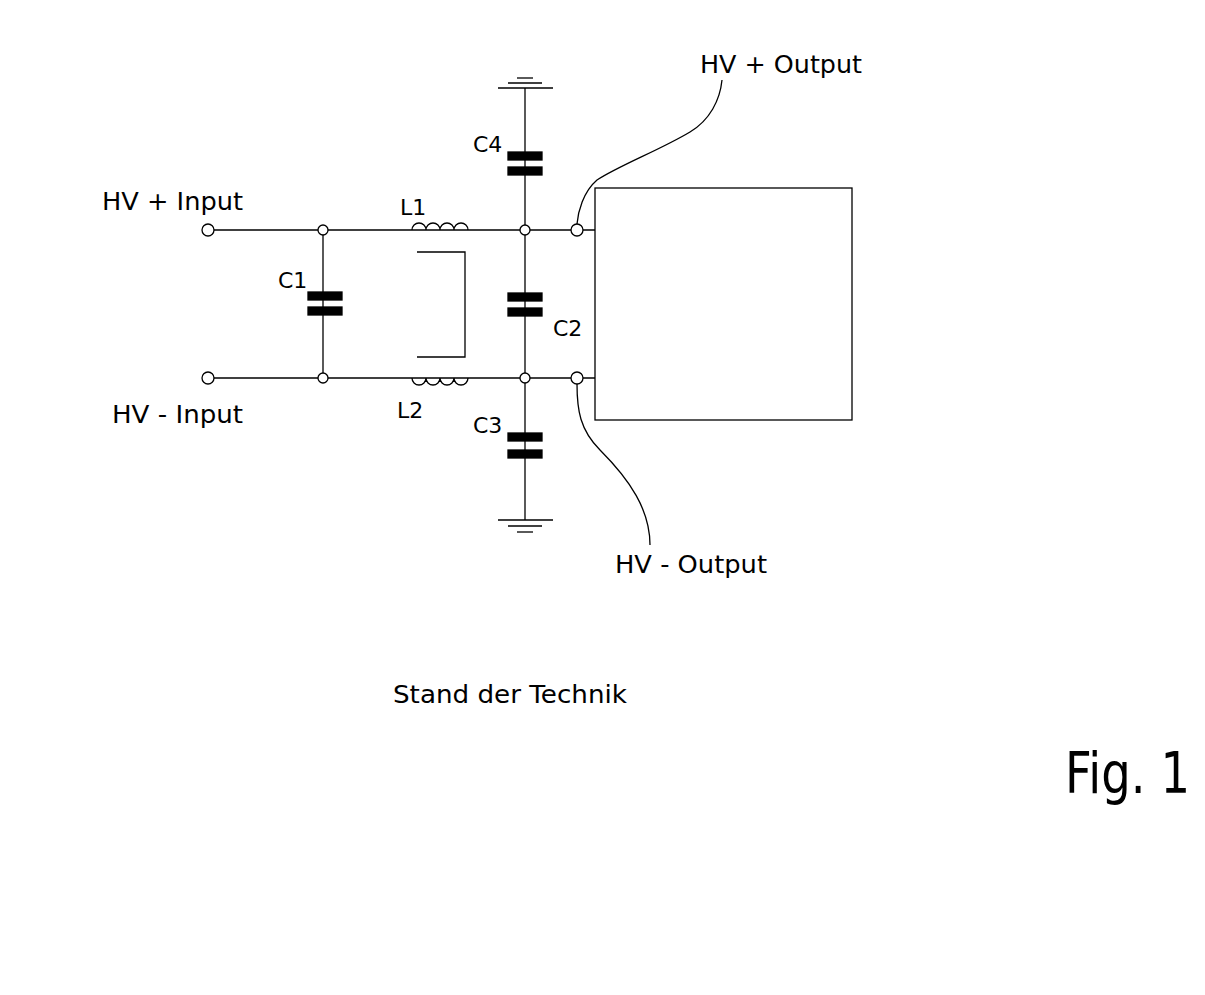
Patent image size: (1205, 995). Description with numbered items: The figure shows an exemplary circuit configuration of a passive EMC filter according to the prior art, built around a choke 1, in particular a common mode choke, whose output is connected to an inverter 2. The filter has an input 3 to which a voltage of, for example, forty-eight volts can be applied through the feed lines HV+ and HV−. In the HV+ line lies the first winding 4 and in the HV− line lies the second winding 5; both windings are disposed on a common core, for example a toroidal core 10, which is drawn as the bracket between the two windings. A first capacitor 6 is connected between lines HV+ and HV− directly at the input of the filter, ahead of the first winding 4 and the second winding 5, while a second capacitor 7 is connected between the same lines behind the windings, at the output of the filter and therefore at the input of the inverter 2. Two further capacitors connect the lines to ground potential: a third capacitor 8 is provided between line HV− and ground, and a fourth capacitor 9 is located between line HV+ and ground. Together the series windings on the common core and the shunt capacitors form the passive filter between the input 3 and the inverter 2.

The choke 1 is at (360, 162).
The inverter 2 is at (810, 420).
The input 3 is at (202, 232).
The first winding L1 4 is at (448, 228).
The second winding L2 5 is at (458, 386).
The first capacitor C1 6 is at (308, 314).
The second capacitor C2 7 is at (533, 290).
The third capacitor C3 8 is at (508, 453).
The fourth capacitor C4 9 is at (532, 150).
The toroidal core 10 is at (417, 255).